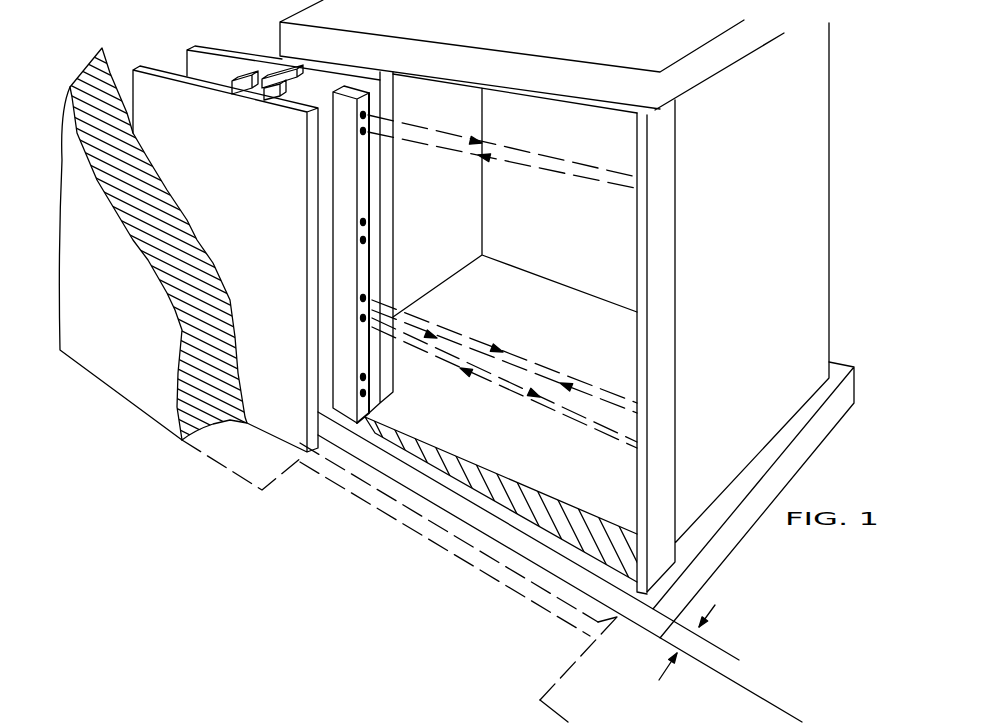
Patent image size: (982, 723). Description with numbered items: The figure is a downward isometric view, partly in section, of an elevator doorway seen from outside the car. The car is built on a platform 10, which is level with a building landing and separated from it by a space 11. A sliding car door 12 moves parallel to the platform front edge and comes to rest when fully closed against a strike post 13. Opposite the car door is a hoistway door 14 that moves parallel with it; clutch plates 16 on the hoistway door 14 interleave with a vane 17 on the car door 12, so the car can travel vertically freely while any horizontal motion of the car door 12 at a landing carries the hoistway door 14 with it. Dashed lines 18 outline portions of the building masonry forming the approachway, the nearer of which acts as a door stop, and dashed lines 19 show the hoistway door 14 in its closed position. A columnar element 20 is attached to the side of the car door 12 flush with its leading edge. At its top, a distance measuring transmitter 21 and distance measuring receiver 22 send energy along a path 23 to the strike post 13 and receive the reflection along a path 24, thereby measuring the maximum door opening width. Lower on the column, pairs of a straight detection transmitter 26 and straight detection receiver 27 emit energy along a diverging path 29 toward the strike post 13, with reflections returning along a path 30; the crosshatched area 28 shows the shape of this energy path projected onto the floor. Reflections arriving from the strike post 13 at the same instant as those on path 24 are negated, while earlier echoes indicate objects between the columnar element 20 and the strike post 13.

The platform 10 is at (847, 368).
The space 11 is at (687, 642).
The sliding door 12 is at (220, 47).
The strike post 13 is at (678, 357).
The hoistway door 14 is at (148, 66).
The clutch plates 16 is at (242, 78).
The vane 17 is at (268, 76).
The dashed lines 18 is at (222, 470).
The dashed lines 19 is at (527, 602).
The columnar element 20 is at (356, 192).
The distance measuring transmitter 21 is at (361, 115).
The distance measuring receiver 22 is at (361, 131).
The path 23 is at (471, 134).
The path 24 is at (526, 165).
The straight detection transmitter 26 is at (361, 222).
The straight detection receiver 27 is at (361, 240).
The crosshatched area 28 is at (540, 491).
The path 29 is at (468, 337).
The path 30 is at (486, 382).